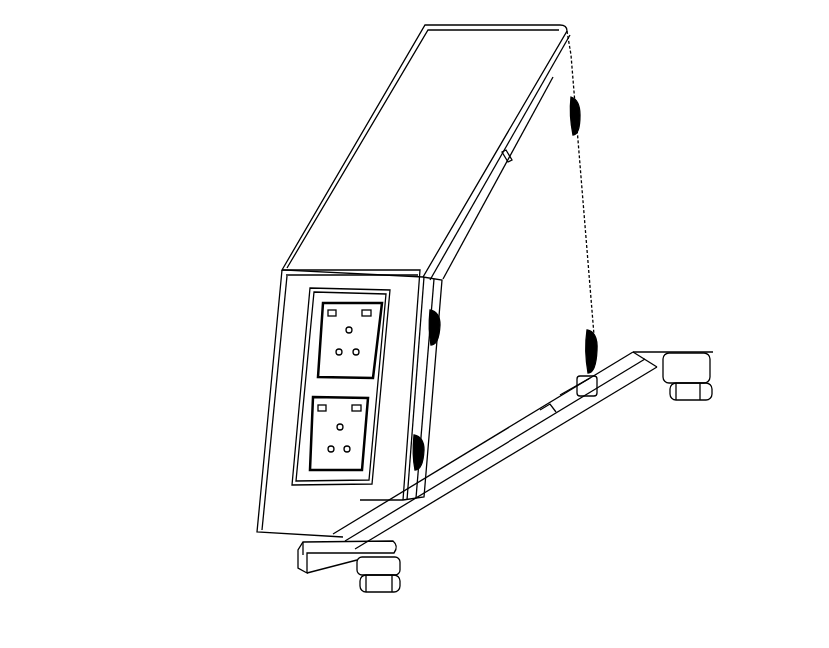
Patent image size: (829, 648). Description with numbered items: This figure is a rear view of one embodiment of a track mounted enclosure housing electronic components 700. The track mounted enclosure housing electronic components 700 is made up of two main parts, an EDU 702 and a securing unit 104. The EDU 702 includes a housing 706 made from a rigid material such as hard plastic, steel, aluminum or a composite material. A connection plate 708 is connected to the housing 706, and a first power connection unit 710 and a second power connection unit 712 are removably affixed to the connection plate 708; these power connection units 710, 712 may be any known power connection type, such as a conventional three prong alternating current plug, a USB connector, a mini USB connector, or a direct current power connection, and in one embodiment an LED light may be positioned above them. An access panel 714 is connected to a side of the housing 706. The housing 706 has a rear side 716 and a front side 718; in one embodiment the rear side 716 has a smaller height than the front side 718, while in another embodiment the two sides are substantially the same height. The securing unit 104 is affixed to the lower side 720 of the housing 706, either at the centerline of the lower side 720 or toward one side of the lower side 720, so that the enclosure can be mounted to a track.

The track mounted enclosure housing electronic components 700 is at (257, 153).
The EDU 702 is at (272, 220).
The housing 706 is at (318, 247).
The connection plate 708 is at (318, 389).
The first power connection unit 710 is at (340, 340).
The second power connection unit 712 is at (317, 450).
The access panel 714 is at (541, 262).
The rear side 716 is at (277, 510).
The front side 718 is at (477, 20).
The lower side 720 is at (277, 539).
The securing unit 104 is at (303, 582).